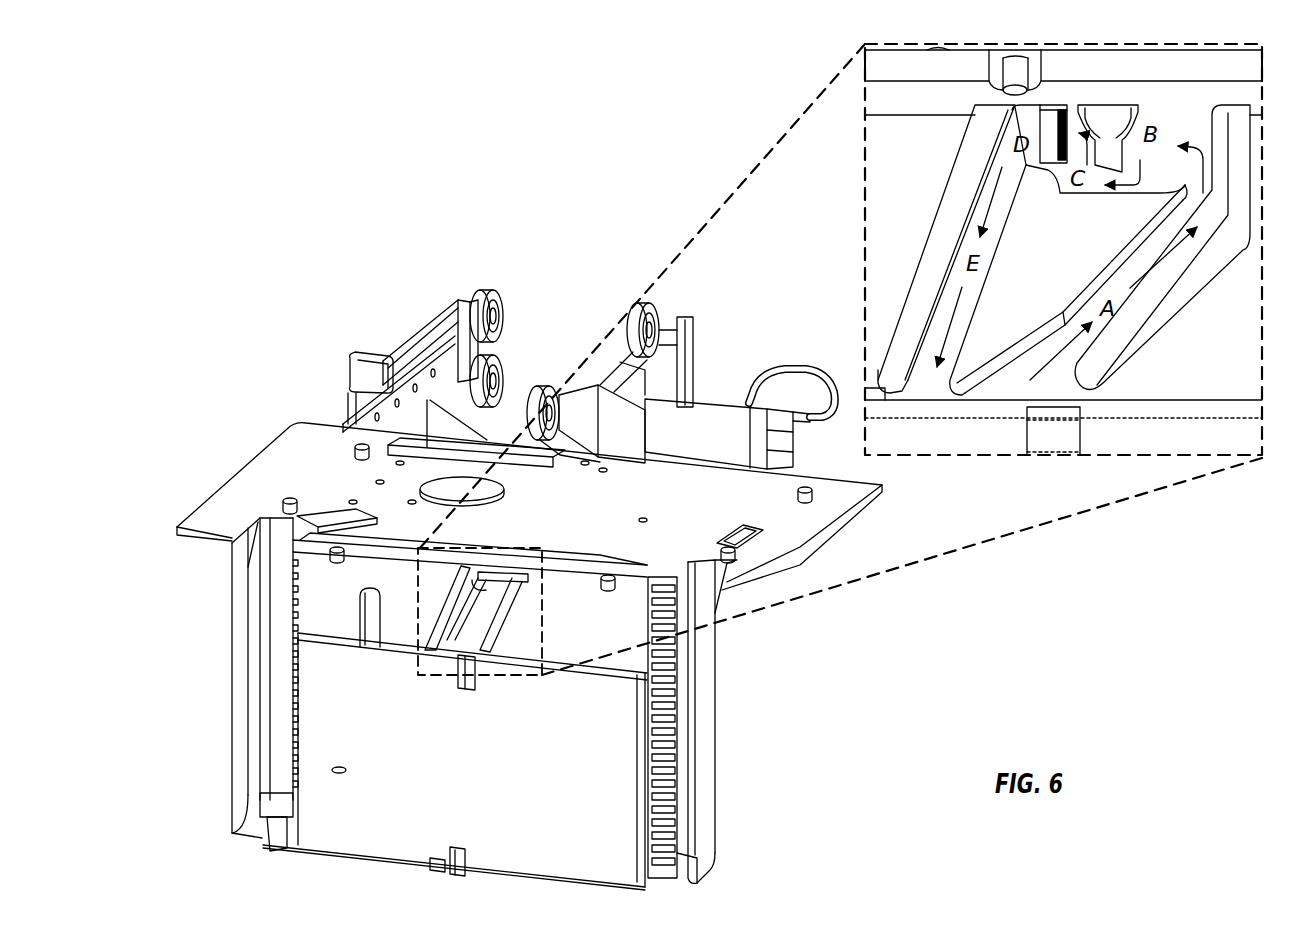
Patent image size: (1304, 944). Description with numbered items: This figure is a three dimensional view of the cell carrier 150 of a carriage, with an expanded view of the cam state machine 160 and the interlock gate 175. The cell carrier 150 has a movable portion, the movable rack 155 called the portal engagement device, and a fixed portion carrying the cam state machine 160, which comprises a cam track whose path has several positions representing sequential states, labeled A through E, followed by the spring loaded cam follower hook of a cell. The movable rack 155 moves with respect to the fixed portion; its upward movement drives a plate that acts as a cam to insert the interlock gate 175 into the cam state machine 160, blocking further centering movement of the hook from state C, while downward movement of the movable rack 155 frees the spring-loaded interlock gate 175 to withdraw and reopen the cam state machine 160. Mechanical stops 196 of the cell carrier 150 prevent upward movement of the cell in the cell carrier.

The cell carrier 150 is at (305, 422).
The movable rack 155 is at (297, 713).
The cam state machine 160 is at (535, 618).
The interlock gate 175 is at (1040, 123).
The mechanical stops 196 is at (897, 515).